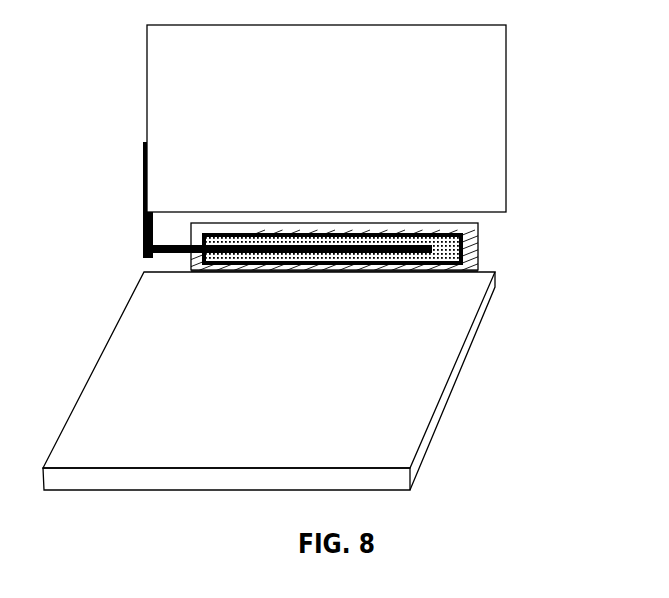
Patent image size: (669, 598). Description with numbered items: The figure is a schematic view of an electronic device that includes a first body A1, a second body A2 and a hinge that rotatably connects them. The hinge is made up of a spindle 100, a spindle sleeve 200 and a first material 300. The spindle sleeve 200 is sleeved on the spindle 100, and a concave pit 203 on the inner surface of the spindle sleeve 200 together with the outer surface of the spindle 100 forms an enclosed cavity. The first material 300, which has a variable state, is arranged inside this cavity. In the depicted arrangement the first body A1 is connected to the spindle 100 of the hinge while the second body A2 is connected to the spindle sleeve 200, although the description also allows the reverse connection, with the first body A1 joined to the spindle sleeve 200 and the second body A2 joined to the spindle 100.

The first body A1 is at (483, 110).
The second body A2 is at (370, 387).
The spindle 100 is at (145, 235).
The spindle sleeve 200 is at (480, 240).
The concave pit 203 is at (470, 268).
The first material 300 is at (445, 271).